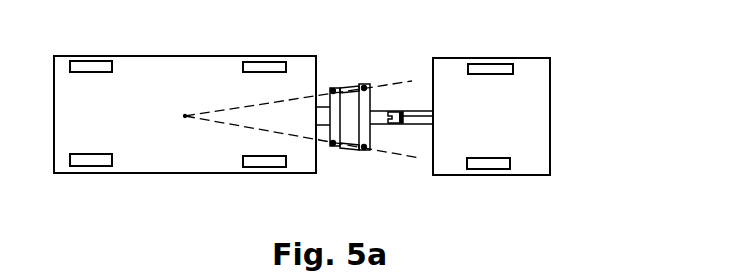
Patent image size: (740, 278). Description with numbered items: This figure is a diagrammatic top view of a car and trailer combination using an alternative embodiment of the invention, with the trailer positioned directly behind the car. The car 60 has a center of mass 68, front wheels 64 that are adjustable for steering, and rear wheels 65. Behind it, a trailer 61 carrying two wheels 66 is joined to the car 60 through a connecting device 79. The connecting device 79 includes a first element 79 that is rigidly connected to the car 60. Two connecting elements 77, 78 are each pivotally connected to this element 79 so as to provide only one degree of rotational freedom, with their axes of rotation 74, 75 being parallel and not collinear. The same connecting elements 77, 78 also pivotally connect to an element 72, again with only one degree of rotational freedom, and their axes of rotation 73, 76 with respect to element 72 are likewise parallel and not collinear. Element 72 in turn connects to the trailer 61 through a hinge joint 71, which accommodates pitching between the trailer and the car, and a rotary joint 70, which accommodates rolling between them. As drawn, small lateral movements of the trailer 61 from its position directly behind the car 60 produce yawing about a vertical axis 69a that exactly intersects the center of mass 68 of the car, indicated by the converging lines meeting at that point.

The car 60 is at (135, 66).
The trailer 61 is at (546, 113).
The front wheels 64 is at (97, 66).
The rear wheels 65 is at (261, 67).
The wheels 66 is at (492, 68).
The center of mass 68 is at (184, 116).
The vertical axis 69a is at (185, 117).
The rotary joint 70 is at (405, 122).
The hinge joint 71 is at (392, 126).
The element 72 is at (372, 105).
The axis of rotation 73 is at (364, 150).
The axis of rotation 74 is at (332, 147).
The axis of rotation 75 is at (333, 89).
The axis of rotation 76 is at (366, 87).
The connecting element 77 is at (346, 151).
The connecting element 78 is at (347, 88).
The connecting device 79 is at (333, 117).